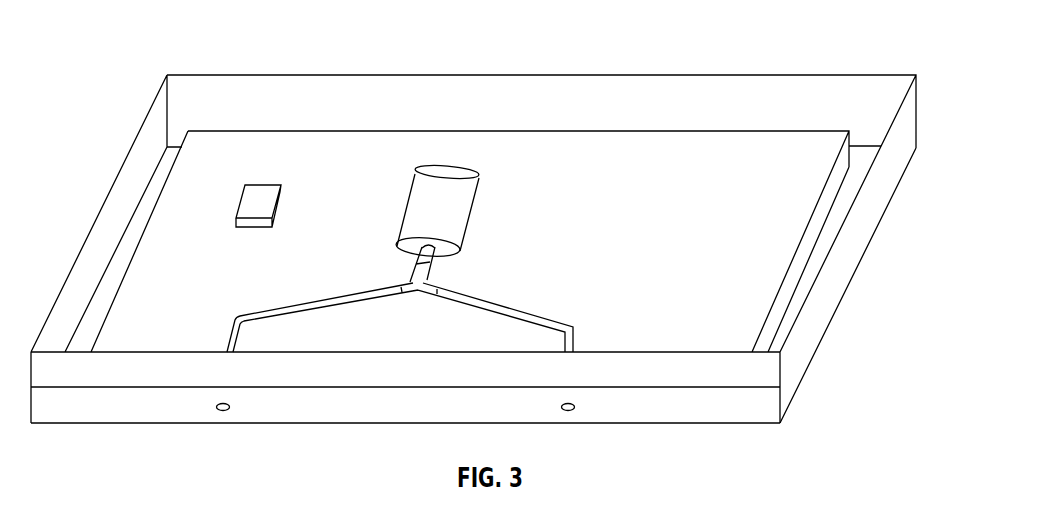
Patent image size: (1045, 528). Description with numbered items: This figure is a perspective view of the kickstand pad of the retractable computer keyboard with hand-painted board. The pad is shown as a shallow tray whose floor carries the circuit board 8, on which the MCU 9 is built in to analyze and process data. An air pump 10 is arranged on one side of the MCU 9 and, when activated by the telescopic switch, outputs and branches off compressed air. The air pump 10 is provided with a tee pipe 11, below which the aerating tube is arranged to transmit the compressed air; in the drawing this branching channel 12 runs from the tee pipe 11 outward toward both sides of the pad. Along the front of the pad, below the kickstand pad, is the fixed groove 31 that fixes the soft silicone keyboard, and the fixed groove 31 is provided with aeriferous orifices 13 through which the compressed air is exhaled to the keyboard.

The circuit board 8 is at (720, 213).
The MCU 9 is at (255, 198).
The air pump 10 is at (441, 202).
The tee pipe 11 is at (427, 281).
The groove channel 12 is at (548, 322).
The aeriferous orifice 13 is at (575, 405).
The fixed groove 31 is at (698, 403).